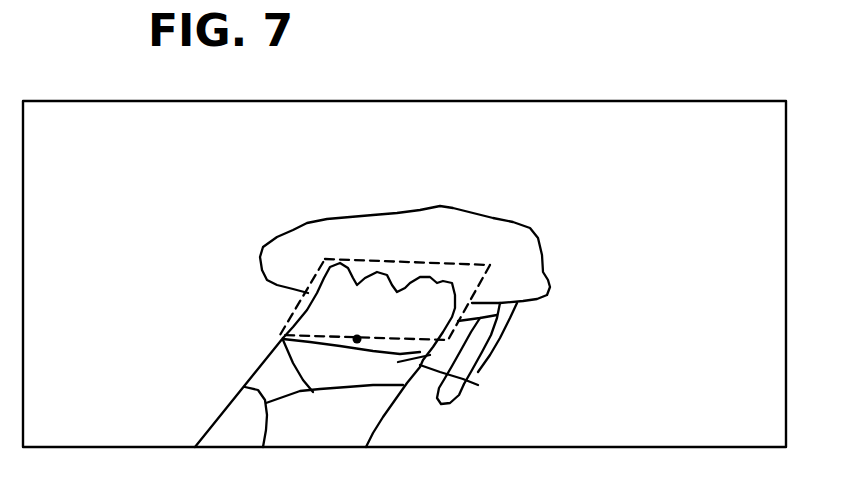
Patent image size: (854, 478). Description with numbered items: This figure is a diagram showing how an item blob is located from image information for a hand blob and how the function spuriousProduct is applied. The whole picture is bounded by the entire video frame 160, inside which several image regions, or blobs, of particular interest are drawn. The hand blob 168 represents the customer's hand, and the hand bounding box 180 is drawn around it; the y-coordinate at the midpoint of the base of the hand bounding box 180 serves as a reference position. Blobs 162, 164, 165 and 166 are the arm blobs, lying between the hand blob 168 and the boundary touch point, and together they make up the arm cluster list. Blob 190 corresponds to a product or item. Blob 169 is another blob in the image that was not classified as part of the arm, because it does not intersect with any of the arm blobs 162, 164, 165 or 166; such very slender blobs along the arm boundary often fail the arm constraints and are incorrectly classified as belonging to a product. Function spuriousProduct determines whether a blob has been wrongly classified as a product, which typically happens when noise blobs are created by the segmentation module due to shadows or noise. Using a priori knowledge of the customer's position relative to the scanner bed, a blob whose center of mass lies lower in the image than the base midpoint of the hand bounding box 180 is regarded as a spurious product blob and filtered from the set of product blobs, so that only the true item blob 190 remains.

The video frame 160 is at (655, 115).
The arm blob 162 is at (222, 424).
The arm blob 164 is at (350, 413).
The arm blob 165 is at (266, 384).
The arm blob 166 is at (478, 385).
The hand blob 168 is at (323, 315).
The blob 169 is at (497, 343).
The hand bounding box 180 is at (497, 315).
The item blob 190 is at (400, 221).